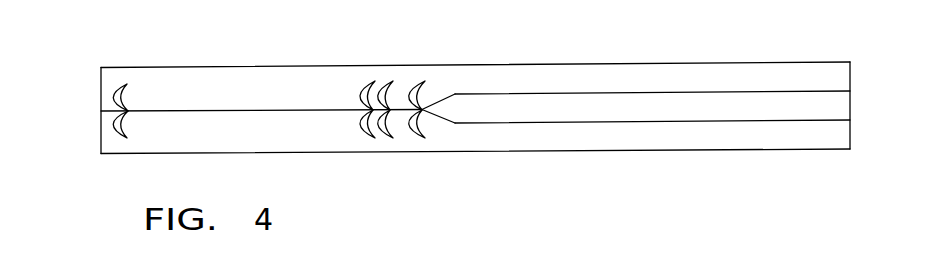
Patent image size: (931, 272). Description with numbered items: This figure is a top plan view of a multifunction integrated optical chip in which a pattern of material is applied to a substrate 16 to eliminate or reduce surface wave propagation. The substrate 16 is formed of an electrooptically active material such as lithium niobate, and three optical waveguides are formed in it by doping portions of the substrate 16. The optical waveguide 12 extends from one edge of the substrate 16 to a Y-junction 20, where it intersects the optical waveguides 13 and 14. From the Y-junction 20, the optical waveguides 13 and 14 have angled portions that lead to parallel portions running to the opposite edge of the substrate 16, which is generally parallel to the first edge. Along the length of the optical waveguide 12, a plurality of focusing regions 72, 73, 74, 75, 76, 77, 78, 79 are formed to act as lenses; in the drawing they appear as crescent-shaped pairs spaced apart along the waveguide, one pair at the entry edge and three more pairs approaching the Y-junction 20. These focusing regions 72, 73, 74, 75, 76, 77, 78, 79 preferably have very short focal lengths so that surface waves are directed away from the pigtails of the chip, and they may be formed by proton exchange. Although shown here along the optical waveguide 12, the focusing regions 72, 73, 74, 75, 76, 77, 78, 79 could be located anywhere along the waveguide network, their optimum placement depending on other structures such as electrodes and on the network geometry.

The optical waveguide 12 is at (187, 108).
The optical waveguide 13 is at (633, 123).
The optical waveguide 14 is at (636, 92).
The substrate 16 is at (793, 150).
The Y-junction 20 is at (446, 127).
The focusing region 72 is at (115, 92).
The focusing region 73 is at (115, 128).
The focusing region 74 is at (362, 94).
The focusing region 75 is at (362, 128).
The focusing region 76 is at (384, 90).
The focusing region 77 is at (388, 137).
The focusing region 78 is at (424, 91).
The focusing region 79 is at (420, 137).